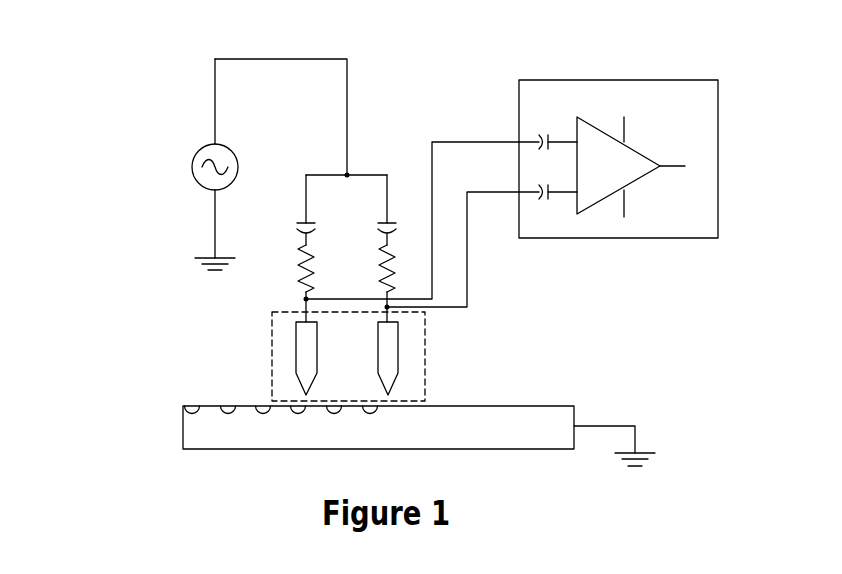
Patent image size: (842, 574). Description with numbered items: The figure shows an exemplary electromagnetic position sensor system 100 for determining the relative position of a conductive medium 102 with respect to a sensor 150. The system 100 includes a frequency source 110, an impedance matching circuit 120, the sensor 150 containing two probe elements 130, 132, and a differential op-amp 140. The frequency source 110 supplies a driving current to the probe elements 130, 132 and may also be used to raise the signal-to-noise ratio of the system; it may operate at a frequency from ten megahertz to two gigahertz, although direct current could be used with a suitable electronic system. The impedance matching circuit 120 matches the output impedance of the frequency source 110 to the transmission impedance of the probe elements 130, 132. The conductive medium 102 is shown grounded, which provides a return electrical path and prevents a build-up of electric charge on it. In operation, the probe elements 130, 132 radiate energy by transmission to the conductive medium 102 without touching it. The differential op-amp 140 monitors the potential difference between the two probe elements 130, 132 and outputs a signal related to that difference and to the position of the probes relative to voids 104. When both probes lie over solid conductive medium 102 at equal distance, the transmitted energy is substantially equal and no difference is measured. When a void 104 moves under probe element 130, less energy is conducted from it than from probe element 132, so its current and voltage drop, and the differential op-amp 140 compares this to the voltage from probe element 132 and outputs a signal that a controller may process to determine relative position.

The electromagnetic position sensor system 100 is at (98, 285).
The conductive medium 102 is at (207, 427).
The voids 104 is at (215, 400).
The frequency source 110 is at (195, 157).
The impedance matching circuit 120 is at (378, 150).
The probe element 130 is at (304, 347).
The probe element 132 is at (392, 362).
The differential op-amp 140 is at (652, 101).
The sensor 150 is at (425, 343).